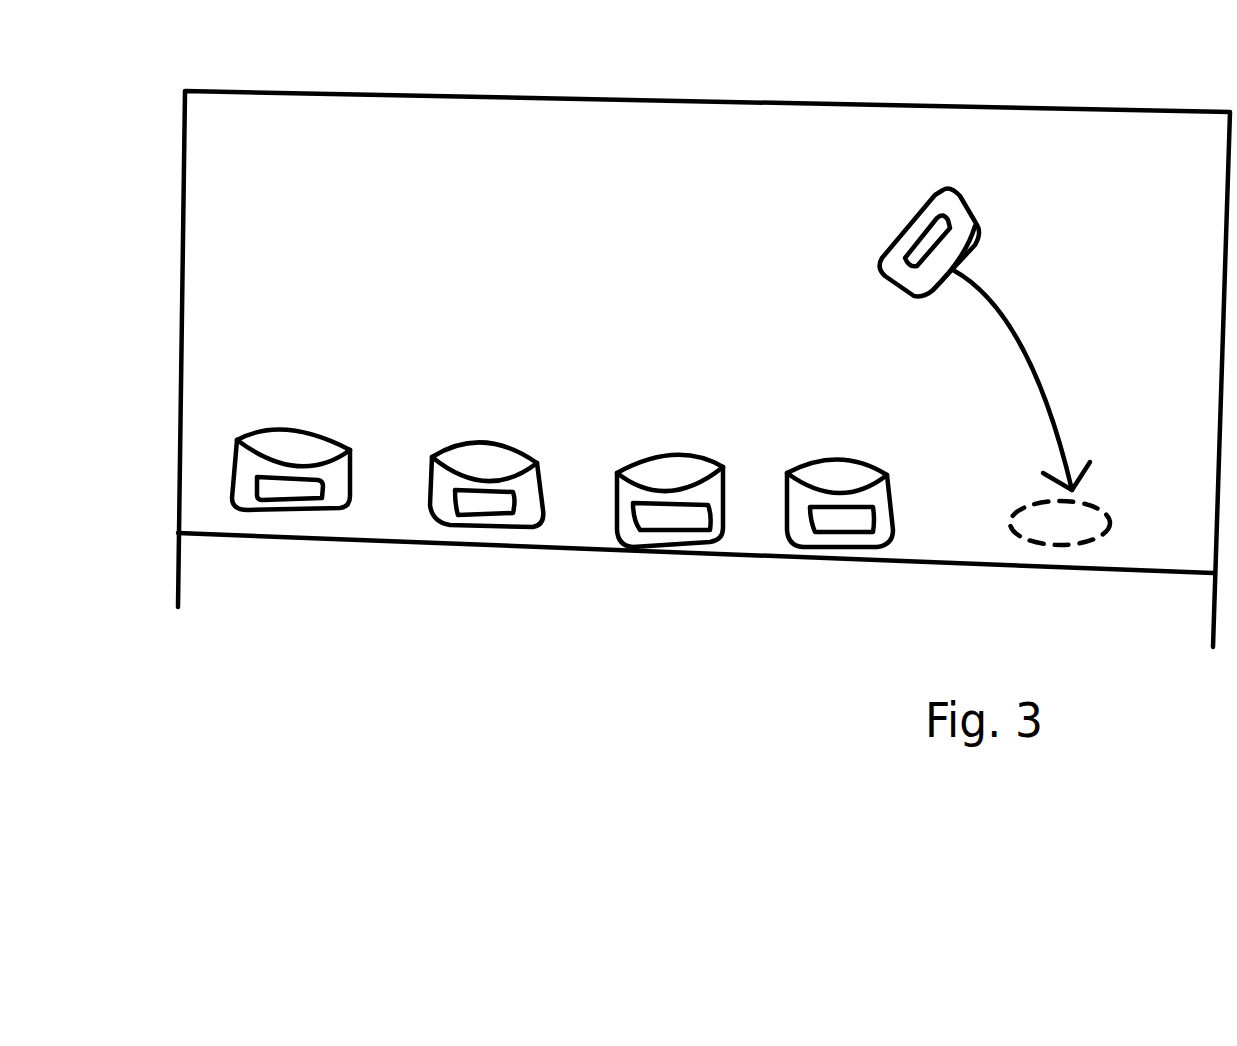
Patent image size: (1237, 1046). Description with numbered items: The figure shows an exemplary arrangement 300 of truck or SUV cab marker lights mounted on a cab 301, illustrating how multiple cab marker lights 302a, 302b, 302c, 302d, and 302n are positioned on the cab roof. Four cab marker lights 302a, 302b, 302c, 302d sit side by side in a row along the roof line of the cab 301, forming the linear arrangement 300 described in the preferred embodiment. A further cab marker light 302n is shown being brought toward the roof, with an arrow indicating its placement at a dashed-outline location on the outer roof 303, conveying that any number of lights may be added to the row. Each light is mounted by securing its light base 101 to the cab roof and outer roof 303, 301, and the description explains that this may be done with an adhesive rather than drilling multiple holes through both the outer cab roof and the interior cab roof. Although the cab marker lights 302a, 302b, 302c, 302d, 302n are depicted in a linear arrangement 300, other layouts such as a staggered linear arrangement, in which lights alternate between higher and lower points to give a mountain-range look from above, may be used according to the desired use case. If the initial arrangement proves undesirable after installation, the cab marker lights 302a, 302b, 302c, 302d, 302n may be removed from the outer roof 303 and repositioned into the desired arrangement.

The arrangement 300 is at (473, 798).
The cab 301 is at (620, 102).
The cab marker light 302a is at (297, 422).
The cab marker light 302b is at (492, 445).
The cab marker light 302c is at (670, 455).
The cab marker light 302d is at (828, 458).
The cab marker light 302n is at (895, 237).
The light base 101 is at (916, 339).
The outer roof 303 is at (1152, 487).